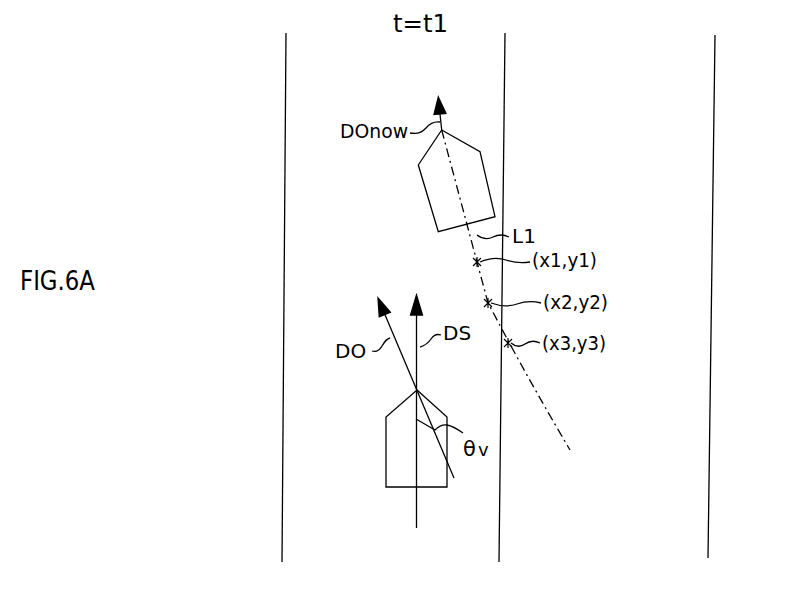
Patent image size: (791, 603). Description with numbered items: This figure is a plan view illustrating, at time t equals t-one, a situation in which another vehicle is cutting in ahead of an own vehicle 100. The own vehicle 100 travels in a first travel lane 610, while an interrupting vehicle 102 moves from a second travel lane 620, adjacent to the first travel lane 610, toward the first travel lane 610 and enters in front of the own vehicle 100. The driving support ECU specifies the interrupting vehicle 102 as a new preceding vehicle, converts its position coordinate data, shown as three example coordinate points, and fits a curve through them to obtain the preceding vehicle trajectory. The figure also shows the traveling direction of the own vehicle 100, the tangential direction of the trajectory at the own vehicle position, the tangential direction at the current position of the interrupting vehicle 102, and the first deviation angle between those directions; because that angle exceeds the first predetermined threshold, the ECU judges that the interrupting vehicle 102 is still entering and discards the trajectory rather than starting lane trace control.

The own vehicle 100 is at (386, 449).
The interrupting vehicle 102 is at (430, 205).
The first travel lane 610 is at (295, 297).
The second travel lane 620 is at (711, 304).